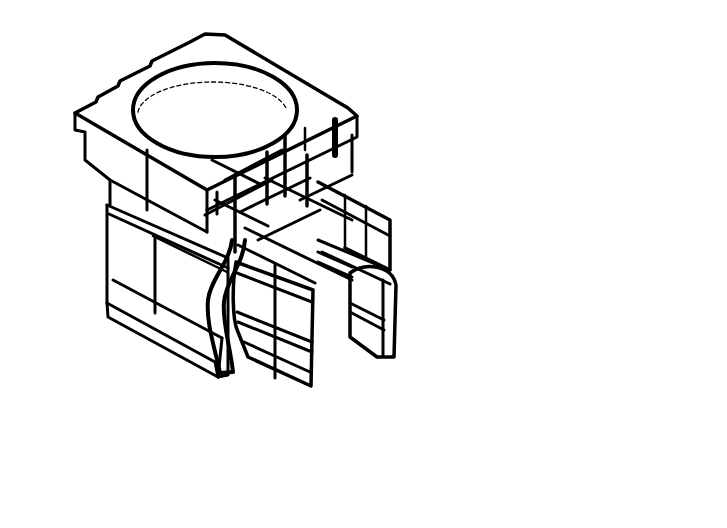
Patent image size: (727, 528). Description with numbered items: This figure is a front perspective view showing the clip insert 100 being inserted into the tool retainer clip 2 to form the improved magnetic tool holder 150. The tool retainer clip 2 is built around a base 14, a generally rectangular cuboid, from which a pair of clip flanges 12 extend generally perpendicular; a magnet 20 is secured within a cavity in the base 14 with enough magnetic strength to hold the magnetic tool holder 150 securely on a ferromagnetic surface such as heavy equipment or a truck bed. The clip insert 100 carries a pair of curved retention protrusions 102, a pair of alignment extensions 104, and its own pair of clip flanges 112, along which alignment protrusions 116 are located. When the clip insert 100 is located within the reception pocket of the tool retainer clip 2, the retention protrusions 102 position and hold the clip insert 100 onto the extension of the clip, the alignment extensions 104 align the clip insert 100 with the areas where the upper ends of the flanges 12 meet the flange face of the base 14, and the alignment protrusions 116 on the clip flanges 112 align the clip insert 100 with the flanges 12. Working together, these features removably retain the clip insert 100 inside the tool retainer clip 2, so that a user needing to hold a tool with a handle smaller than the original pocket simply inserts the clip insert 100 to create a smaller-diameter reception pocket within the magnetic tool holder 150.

The tool retainer clip 2 is at (345, 56).
The clip flanges 12 is at (116, 261).
The base 14 is at (107, 68).
The magnet 20 is at (208, 95).
The clip insert 100 is at (208, 391).
The retention protrusions 102 is at (384, 252).
The alignment extensions 104 is at (384, 213).
The clip flanges 112 is at (275, 375).
The alignment protrusions 116 is at (318, 358).
The magnetic tool holder 150 is at (533, 154).